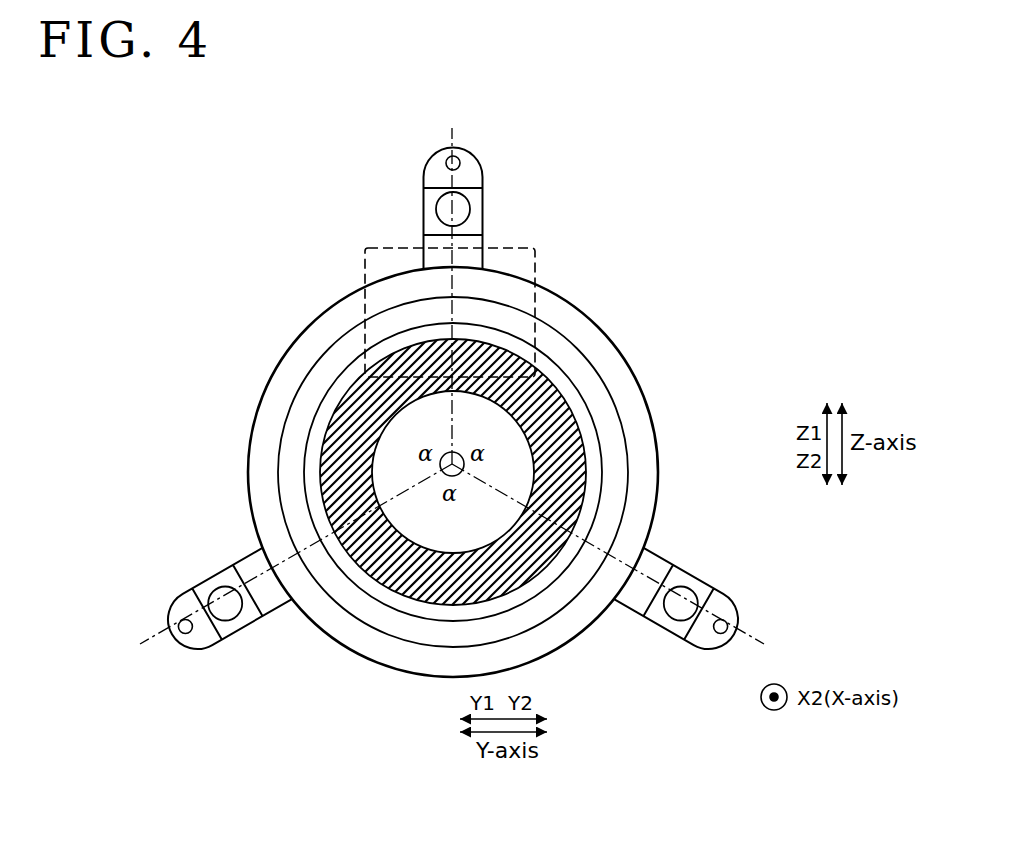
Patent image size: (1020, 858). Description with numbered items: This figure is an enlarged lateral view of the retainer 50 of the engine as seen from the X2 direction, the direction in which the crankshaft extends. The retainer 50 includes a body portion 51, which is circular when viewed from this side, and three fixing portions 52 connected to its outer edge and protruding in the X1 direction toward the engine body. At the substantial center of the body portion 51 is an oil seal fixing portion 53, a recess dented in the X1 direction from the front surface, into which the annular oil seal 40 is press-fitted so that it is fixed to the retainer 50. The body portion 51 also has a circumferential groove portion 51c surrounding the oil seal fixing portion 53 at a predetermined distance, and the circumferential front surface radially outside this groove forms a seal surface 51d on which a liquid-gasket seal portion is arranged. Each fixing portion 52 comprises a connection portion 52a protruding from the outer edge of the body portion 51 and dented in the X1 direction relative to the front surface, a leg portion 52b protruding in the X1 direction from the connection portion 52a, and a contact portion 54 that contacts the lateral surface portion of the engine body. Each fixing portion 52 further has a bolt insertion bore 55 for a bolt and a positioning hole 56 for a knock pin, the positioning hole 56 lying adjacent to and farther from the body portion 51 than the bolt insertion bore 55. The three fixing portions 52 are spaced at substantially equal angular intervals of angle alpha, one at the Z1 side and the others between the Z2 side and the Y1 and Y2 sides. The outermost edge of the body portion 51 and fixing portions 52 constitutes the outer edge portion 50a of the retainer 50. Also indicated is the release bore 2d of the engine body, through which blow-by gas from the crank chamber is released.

The retainer 50 is at (650, 126).
The body portion 51 is at (600, 357).
The outer edge portion 50a is at (643, 389).
The oil seal 40 is at (585, 447).
The oil seal fixing portion 53 is at (585, 463).
The seal surface 51d is at (637, 490).
The circumferential groove portion 51c is at (572, 590).
The fixing portion 52 is at (477, 147).
The connection portion 52a is at (482, 258).
The leg portion 52b is at (482, 235).
The contact portion 54 is at (482, 178).
The bolt insertion bore 55 is at (465, 207).
The positioning hole 56 is at (458, 170).
The release bore 2d is at (535, 272).